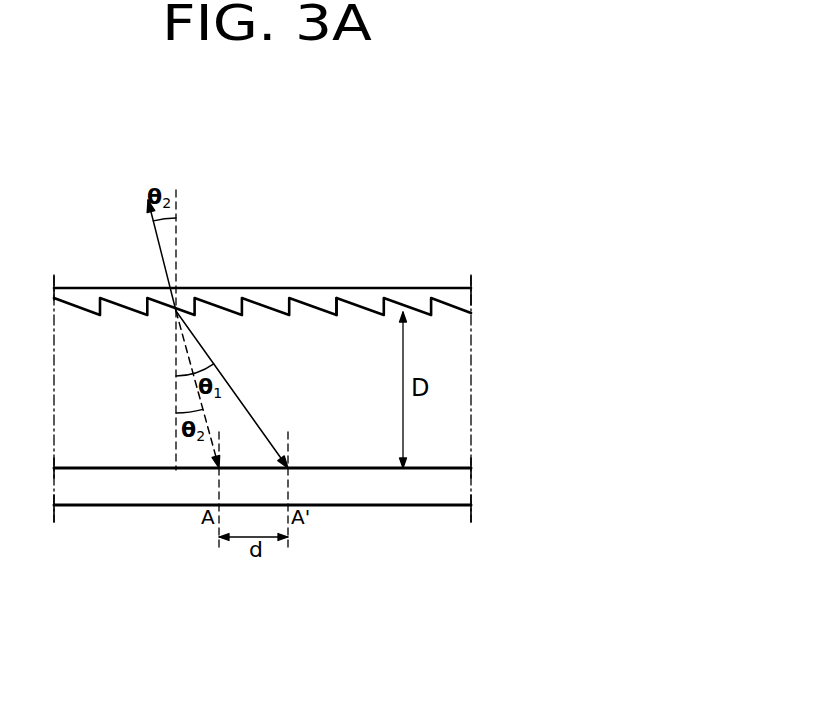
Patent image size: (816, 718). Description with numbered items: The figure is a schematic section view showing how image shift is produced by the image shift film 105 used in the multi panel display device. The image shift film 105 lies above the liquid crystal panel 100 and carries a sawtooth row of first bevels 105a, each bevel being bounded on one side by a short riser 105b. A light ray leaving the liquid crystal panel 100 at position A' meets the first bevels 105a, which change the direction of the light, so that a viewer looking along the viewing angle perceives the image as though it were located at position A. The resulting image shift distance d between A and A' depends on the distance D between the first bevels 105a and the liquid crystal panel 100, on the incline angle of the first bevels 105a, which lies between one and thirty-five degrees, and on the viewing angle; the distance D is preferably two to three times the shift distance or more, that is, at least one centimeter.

The liquid crystal panel 100 is at (370, 487).
The image shift film 105 is at (262, 307).
The first bevels 105a is at (360, 313).
The vertical surface of prism 105b is at (335, 314).